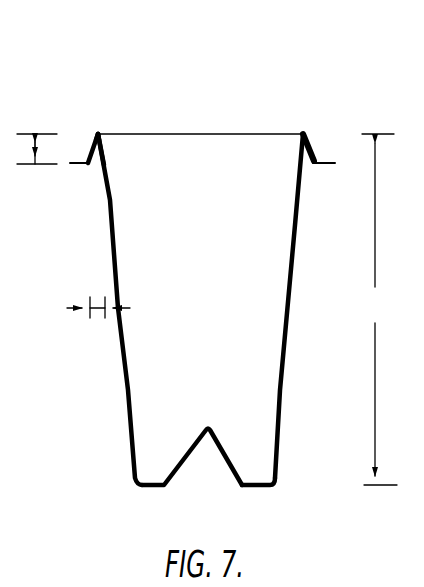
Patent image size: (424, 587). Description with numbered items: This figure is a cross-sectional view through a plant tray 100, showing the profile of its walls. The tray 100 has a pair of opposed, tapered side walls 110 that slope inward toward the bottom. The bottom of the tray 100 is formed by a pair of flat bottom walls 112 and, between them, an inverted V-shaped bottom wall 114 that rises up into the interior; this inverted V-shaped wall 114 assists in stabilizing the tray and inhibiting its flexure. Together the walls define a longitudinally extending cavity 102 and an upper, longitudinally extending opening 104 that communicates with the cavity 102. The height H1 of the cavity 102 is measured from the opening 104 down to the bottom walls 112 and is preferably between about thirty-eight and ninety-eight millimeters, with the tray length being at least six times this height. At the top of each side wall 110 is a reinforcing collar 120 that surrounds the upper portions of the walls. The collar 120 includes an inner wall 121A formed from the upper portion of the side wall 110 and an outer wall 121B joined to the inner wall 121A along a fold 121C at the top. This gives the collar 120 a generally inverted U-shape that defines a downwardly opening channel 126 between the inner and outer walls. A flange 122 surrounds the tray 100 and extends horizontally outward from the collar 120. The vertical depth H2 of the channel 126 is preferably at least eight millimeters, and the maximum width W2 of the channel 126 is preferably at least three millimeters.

The tray 100 is at (253, 91).
The cavity 102 is at (218, 213).
The opening 104 is at (206, 131).
The side walls 110 is at (284, 363).
The flat bottom walls 112 is at (257, 487).
The inverted V-shaped bottom wall 114 is at (182, 465).
The reinforcing collar 120 is at (309, 129).
The inner wall 121A is at (107, 143).
The outer wall 121B is at (90, 152).
The fold 121C is at (98, 133).
The flange 122 is at (330, 162).
The channel 126 is at (308, 164).
The height of the cavity H1 is at (379, 309).
The vertical depth of the channel H2 is at (34, 147).
The maximum width of the channel W2 is at (97, 312).